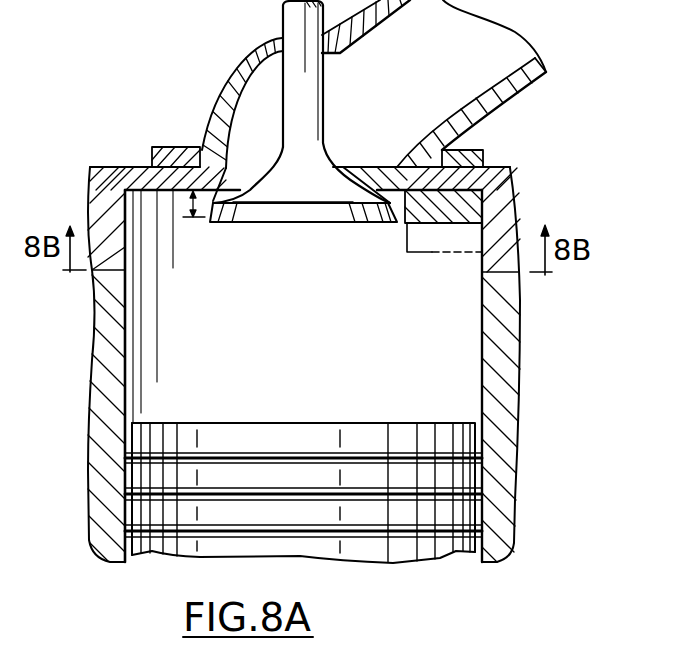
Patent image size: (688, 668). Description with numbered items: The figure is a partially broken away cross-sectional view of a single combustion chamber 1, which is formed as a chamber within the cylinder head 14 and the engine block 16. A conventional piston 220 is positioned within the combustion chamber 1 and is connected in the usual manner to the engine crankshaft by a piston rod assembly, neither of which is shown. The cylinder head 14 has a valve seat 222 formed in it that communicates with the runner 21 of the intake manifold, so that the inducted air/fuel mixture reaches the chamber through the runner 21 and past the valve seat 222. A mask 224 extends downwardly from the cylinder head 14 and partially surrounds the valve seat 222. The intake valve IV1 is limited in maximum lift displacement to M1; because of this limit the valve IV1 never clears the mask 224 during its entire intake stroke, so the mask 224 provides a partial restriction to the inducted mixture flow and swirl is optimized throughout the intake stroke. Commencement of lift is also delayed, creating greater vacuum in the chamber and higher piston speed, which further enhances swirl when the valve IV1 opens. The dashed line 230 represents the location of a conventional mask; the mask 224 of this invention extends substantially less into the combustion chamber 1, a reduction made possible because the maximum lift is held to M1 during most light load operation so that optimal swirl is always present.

The combustion chamber 1 is at (516, 355).
The cylinder head 14 is at (101, 166).
The engine block 16 is at (98, 309).
The runner 21 is at (481, 86).
The piston 220 is at (303, 420).
The valve seat 222 is at (215, 170).
The mask 224 is at (511, 172).
The dashed line 230 is at (461, 254).
The intake valve IV1 is at (324, 117).
The maximum lift displacement M1 is at (185, 220).